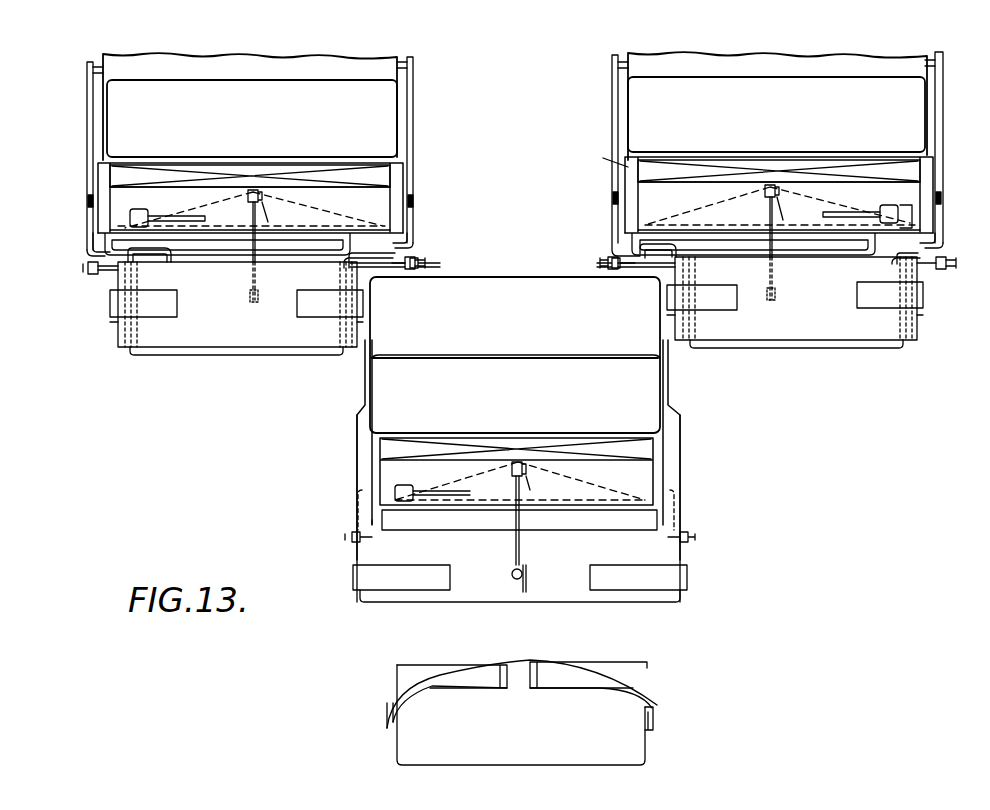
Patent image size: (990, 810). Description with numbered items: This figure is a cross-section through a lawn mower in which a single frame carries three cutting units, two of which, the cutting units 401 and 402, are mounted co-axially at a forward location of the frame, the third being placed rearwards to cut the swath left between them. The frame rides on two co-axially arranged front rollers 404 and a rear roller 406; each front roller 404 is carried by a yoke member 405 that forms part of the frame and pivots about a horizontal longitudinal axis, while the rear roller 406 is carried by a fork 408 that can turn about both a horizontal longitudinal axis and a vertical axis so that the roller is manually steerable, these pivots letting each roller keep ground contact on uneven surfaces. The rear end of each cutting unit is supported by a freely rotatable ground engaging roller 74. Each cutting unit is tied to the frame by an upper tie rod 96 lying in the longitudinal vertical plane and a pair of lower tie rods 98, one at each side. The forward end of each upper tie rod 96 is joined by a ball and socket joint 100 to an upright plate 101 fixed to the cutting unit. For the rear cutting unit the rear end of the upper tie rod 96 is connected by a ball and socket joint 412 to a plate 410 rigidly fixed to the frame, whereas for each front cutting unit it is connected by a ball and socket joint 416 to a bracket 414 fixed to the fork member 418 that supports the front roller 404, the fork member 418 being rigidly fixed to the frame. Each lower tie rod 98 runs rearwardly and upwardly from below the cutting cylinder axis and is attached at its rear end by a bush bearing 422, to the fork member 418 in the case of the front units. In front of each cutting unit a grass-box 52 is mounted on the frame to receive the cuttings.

The grass-box 52 is at (390, 75).
The ground engaging roller 74 is at (617, 525).
The upper tie rod 96 is at (253, 253).
The lower tie rod 98 is at (92, 250).
The ball and socket joint 100 is at (253, 190).
The upright plate 101 is at (262, 213).
The cutting unit 401 is at (400, 177).
The cutting unit 402 is at (923, 158).
The front roller 404 is at (303, 347).
The yoke member 405 is at (160, 310).
The rear roller 406 is at (630, 748).
The fork 408 is at (624, 678).
The plate 410 is at (528, 578).
The ball and socket joint 412 is at (512, 575).
The bracket 414 is at (260, 300).
The ball and socket joint 416 is at (253, 297).
The fork member 418 is at (193, 333).
The bush bearing 422 is at (90, 275).